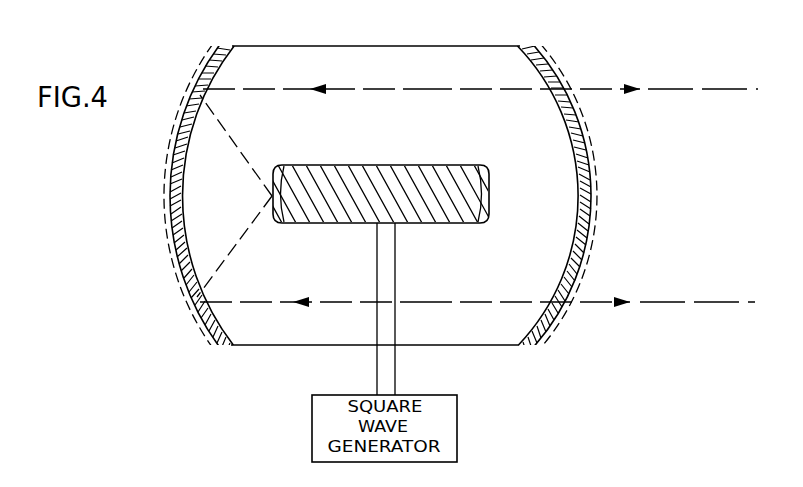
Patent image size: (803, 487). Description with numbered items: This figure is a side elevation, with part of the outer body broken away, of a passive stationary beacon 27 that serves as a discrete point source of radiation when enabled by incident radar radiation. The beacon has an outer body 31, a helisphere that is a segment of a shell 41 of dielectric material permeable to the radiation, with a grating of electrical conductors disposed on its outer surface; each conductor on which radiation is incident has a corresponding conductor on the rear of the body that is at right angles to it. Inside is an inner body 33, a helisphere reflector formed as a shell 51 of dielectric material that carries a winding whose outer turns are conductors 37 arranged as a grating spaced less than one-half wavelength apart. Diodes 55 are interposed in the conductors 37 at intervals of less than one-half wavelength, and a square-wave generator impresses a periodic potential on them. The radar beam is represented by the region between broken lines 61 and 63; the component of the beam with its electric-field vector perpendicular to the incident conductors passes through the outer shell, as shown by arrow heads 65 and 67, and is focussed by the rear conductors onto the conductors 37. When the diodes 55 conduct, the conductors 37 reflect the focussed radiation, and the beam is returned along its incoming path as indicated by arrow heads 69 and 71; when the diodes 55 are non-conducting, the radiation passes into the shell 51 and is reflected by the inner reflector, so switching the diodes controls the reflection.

The passive stationary beacon 27 is at (415, 211).
The outer body 31 is at (583, 264).
The inner body 33 is at (385, 179).
The conductors 37 is at (441, 184).
The shell 41 is at (290, 347).
The shell 51 is at (365, 168).
The diodes 55 is at (318, 182).
The broken line 61 is at (678, 90).
The broken line 63 is at (673, 303).
The arrow head 65 is at (331, 90).
The arrow head 67 is at (311, 303).
The arrow head 69 is at (607, 90).
The arrow head 71 is at (589, 303).